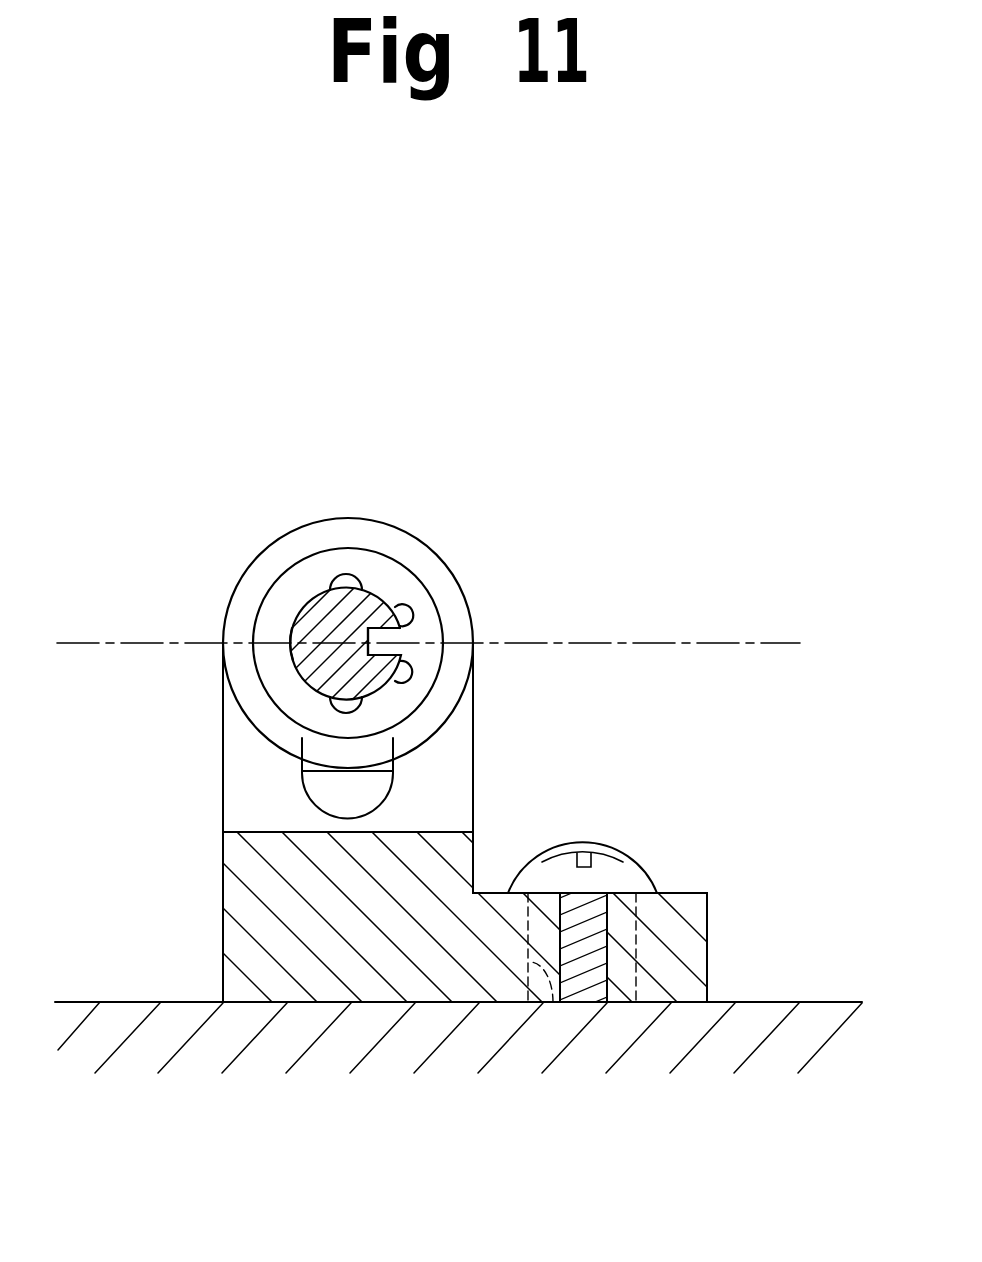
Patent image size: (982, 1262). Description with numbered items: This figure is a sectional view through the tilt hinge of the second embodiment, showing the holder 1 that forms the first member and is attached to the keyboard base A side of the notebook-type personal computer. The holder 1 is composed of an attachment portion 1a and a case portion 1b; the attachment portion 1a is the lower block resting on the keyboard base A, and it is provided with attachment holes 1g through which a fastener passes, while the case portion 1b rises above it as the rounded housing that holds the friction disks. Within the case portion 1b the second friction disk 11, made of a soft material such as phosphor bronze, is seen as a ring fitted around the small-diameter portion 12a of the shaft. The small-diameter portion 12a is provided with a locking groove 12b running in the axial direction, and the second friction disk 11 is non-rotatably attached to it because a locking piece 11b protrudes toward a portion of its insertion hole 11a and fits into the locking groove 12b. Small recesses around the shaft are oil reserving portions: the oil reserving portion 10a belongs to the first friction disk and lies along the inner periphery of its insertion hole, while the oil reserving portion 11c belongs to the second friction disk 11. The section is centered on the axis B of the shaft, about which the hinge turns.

The holder 1 is at (200, 895).
The attachment portion 1a is at (682, 903).
The case portion 1b is at (298, 528).
The attachment hole 1g is at (553, 1003).
The oil reserving portion 10a is at (343, 575).
The second friction disk 11 is at (395, 560).
The insertion hole 11a is at (293, 660).
The locking piece 11b is at (400, 630).
The oil reserving portion 11c is at (412, 605).
The small-diameter portion 12a is at (310, 600).
The locking groove 12b is at (405, 652).
The keyboard base A is at (807, 1000).
The axis B is at (695, 637).